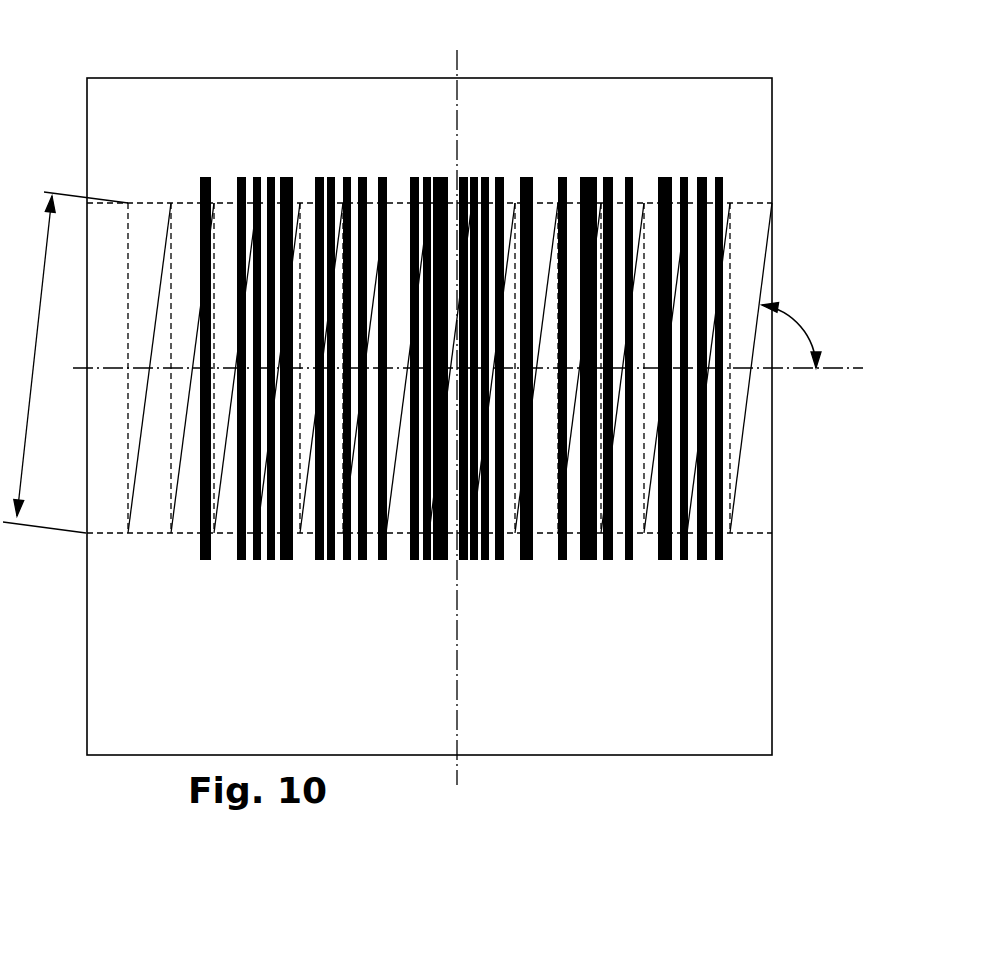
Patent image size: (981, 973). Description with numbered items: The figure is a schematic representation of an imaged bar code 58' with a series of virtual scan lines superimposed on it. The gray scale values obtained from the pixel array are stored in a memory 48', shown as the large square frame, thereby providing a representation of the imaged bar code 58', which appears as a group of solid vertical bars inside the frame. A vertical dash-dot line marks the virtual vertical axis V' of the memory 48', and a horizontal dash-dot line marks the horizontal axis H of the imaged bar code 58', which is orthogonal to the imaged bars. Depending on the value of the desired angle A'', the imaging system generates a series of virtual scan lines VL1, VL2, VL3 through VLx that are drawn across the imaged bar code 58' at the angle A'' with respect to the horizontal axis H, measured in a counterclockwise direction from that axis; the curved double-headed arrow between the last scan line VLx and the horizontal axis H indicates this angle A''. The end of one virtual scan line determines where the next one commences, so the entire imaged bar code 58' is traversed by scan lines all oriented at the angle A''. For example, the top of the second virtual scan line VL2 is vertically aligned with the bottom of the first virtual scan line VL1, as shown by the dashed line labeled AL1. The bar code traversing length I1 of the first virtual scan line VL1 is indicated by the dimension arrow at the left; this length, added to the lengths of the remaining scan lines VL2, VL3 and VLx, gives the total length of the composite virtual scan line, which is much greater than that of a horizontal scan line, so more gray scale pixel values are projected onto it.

The imaged bar code 58' is at (461, 303).
The memory 48' is at (449, 445).
The virtual vertical axis V' is at (488, 409).
The horizontal axis H is at (863, 370).
The bar code traversing length of virtual scan line VL1 I1 is at (65, 362).
The first virtual scan line VL1 is at (105, 377).
The second virtual scan line VL2 is at (145, 415).
The third virtual scan line VL3 is at (181, 478).
The last virtual scan line VLx is at (747, 415).
The alignment dashed line AL1 is at (128, 468).
The desired angle A'' is at (807, 326).